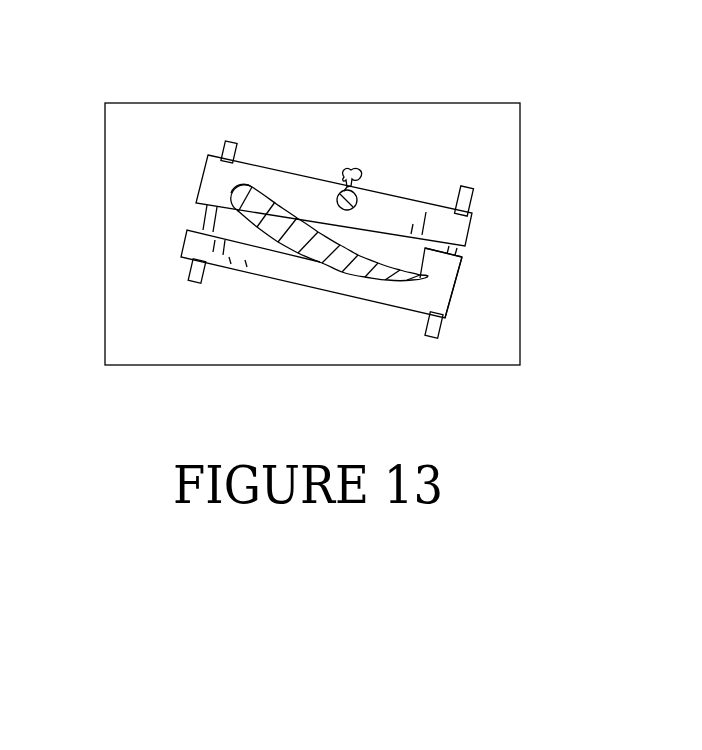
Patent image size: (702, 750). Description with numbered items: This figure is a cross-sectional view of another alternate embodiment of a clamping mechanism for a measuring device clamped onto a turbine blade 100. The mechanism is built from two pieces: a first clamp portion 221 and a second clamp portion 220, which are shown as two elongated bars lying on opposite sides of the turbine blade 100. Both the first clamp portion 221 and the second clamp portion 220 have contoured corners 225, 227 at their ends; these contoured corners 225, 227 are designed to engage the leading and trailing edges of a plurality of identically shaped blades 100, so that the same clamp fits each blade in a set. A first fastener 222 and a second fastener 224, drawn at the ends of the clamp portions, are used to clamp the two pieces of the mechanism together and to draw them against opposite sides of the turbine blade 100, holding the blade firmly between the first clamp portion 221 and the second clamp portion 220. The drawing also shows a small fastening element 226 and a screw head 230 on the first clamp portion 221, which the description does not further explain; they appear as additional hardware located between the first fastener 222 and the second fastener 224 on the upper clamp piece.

The turbine blade 100 is at (383, 274).
The second clamp portion 220 is at (250, 263).
The first clamp portion 221 is at (283, 190).
The first fastener 222 is at (230, 143).
The second fastener 224 is at (467, 189).
The contoured corner 225 is at (452, 291).
The wing nut 226 is at (357, 168).
The contoured corner 227 is at (235, 190).
The screw 230 is at (340, 190).